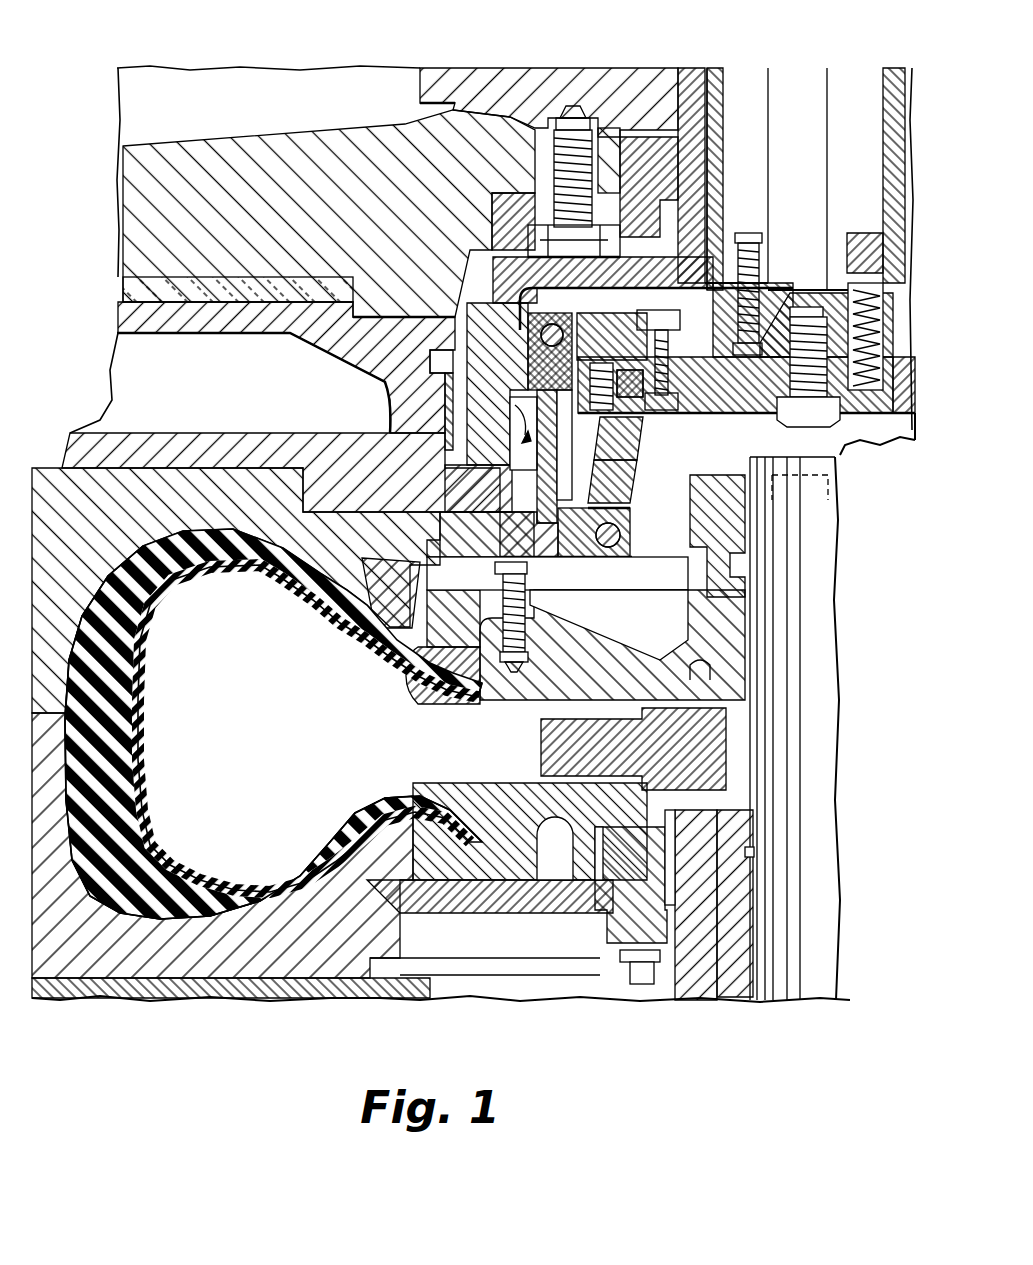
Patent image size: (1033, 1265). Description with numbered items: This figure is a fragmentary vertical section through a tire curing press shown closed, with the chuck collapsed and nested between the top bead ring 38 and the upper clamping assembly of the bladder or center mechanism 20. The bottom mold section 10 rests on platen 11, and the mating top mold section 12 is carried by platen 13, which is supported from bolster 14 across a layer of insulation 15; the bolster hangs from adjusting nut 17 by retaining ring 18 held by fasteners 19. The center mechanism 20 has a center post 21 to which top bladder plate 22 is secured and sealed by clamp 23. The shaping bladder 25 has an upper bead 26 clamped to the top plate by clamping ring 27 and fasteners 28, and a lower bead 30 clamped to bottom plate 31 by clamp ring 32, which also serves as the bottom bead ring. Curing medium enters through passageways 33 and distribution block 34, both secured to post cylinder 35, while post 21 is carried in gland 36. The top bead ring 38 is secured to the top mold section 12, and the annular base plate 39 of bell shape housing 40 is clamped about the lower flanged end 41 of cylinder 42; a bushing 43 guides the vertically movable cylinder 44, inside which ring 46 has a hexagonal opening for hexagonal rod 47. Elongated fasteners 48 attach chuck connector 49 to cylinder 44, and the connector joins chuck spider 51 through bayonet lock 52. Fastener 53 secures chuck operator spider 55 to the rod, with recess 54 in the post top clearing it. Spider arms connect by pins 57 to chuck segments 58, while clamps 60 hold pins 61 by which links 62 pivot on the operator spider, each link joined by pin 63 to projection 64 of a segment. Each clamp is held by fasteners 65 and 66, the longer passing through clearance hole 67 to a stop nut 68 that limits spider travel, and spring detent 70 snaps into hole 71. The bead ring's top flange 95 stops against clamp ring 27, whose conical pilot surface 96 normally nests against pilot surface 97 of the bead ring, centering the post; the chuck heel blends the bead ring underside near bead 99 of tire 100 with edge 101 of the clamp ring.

The bottom mold section 10 is at (228, 982).
The platen 11 is at (155, 1000).
The top mold section 12 is at (45, 488).
The platen 13 is at (113, 366).
The bolster 14 is at (135, 178).
The layer of insulation 15 is at (125, 290).
The adjusting nut 17 is at (455, 75).
The retaining ring 18 is at (495, 215).
The fasteners 19 is at (560, 160).
The center or shaping mechanism 20 is at (845, 756).
The center post 21 is at (838, 665).
The top bladder plate 22 is at (695, 672).
The clamp 23 is at (700, 560).
The shaping bladder or bag 25 is at (140, 745).
The upper bead 26 is at (452, 706).
The clamping ring 27 is at (588, 603).
The fasteners 28 is at (528, 574).
The lower bead 30 is at (455, 790).
The bottom plate 31 is at (555, 882).
The clamp ring 32 is at (490, 918).
The passageways 33 is at (542, 752).
The distribution block 34 is at (612, 912).
The post cylinder 35 is at (690, 1000).
The gland 36 is at (740, 998).
The top bead ring 38 is at (375, 625).
The annular base plate 39 is at (337, 432).
The bell shape housing 40 is at (440, 356).
The lower flanged end 41 is at (675, 215).
The cylinder 42 is at (690, 80).
The bushing 43 is at (712, 165).
The cylinder 44 is at (724, 62).
The ring 46 is at (867, 236).
The hexagonal rod 47 is at (835, 75).
The elongated fasteners 48 is at (762, 262).
The chuck connector 49 is at (735, 370).
The chuck spider 51 is at (565, 320).
The breech or bayonet lock 52 is at (690, 283).
The fastener 53 is at (805, 428).
The recess 54 is at (830, 492).
The chuck operator spider 55 is at (714, 414).
The pins 57 is at (527, 300).
The chuck segments 58 is at (505, 395).
The clamp 60 is at (606, 410).
The pins 61 is at (600, 330).
The links 62 is at (636, 470).
The pin 63 is at (620, 531).
The projection 64 is at (630, 558).
The fastener 65 is at (606, 428).
The fastener 66 is at (632, 398).
The clearance hole 67 is at (665, 410).
The stop nut 68 is at (648, 312).
The spring detent 70 is at (893, 442).
The hole 71 is at (865, 395).
The horizontal top flange 95 is at (425, 448).
The flaring conical pilot surface 96 is at (392, 660).
The conical or pilot surface 97 is at (368, 542).
The bead 99 is at (318, 590).
The tire 100 is at (122, 632).
The edge 101 is at (455, 694).